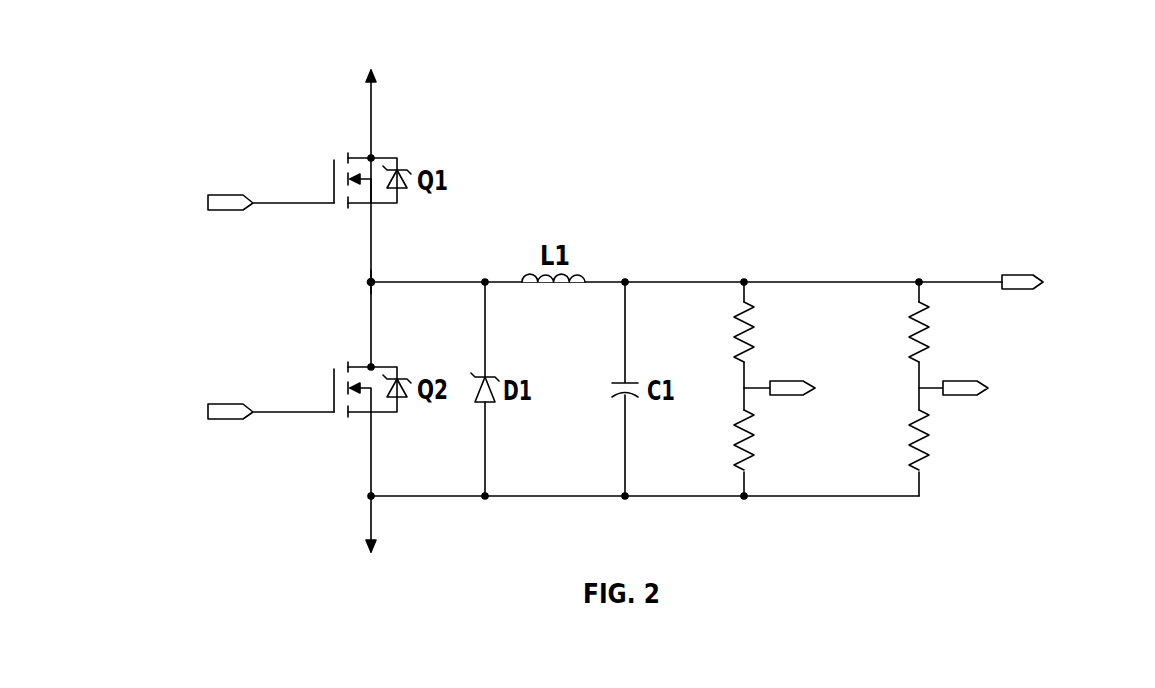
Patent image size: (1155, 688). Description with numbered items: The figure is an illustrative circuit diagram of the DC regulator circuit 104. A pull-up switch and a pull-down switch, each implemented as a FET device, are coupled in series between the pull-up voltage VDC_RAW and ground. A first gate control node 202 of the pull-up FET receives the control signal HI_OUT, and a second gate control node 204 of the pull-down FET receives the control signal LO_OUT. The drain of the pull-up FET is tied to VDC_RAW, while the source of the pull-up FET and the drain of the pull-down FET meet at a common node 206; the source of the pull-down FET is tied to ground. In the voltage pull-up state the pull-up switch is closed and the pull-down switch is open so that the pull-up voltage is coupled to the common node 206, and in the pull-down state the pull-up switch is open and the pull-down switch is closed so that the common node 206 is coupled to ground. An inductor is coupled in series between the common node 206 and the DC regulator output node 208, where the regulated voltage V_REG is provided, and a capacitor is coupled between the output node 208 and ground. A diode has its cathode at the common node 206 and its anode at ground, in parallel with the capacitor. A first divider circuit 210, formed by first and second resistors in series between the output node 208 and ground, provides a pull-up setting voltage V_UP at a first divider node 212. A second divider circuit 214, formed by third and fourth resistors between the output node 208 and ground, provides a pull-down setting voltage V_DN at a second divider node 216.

The DC regulator circuit 104 is at (685, 138).
The first gate control node 202 is at (228, 193).
The second gate control node 204 is at (228, 403).
The common node 206 is at (368, 280).
The DC regulator output node 208 is at (1013, 274).
The first divider circuit 210 is at (731, 367).
The first divider node 212 is at (748, 385).
The second divider circuit 214 is at (901, 353).
The second divider node 216 is at (923, 385).